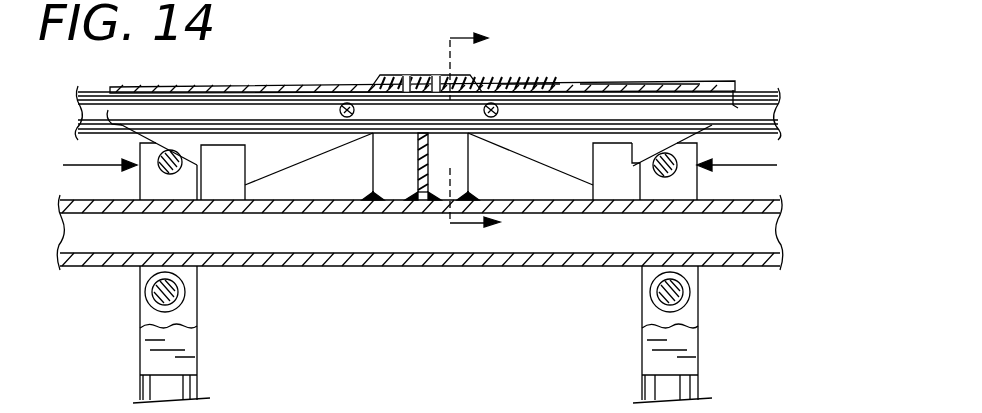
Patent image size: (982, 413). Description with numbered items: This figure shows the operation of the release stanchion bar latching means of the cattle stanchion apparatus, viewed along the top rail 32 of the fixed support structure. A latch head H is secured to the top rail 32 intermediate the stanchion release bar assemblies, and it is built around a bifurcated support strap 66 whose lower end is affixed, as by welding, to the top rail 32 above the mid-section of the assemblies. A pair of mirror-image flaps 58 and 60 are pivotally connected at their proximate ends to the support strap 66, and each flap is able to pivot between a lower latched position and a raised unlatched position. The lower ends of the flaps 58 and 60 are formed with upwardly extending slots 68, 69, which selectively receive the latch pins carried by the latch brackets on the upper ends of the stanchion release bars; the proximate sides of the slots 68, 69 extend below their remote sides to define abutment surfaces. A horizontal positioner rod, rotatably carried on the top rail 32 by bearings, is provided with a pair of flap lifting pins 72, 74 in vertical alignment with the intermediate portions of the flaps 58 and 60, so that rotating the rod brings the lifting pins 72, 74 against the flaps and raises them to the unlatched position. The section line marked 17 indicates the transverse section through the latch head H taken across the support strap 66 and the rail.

The section line 17- 17 is at (495, 132).
The top rail 32 is at (770, 227).
The flap 58 is at (212, 82).
The flap 60 is at (600, 80).
The bifurcated support strap 66 is at (402, 177).
The slot 68 is at (247, 156).
The slot 69 is at (597, 167).
The flap lifting pin 72 is at (343, 104).
The flap lifting pin 74 is at (527, 78).
The latch head H is at (410, 78).